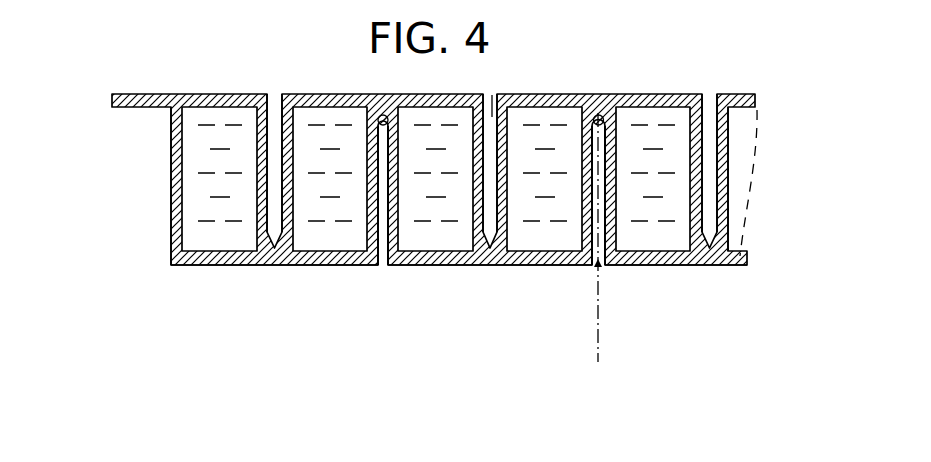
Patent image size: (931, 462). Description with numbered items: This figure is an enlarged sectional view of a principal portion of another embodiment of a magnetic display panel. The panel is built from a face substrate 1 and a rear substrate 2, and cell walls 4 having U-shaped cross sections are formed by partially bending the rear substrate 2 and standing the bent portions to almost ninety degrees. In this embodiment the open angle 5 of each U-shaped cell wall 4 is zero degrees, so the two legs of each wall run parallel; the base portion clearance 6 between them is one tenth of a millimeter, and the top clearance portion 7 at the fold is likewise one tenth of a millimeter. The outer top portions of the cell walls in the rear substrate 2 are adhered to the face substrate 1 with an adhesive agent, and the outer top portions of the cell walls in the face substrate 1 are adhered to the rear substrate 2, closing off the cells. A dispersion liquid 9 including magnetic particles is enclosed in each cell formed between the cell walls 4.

The face substrate 1 is at (637, 100).
The rear substrate 2 is at (512, 263).
The cell wall 4 is at (583, 196).
The open angle 5 is at (605, 350).
The base portion clearance 6 is at (593, 265).
The top clearance portion 7 is at (599, 113).
The dispersion liquid 9 is at (203, 185).